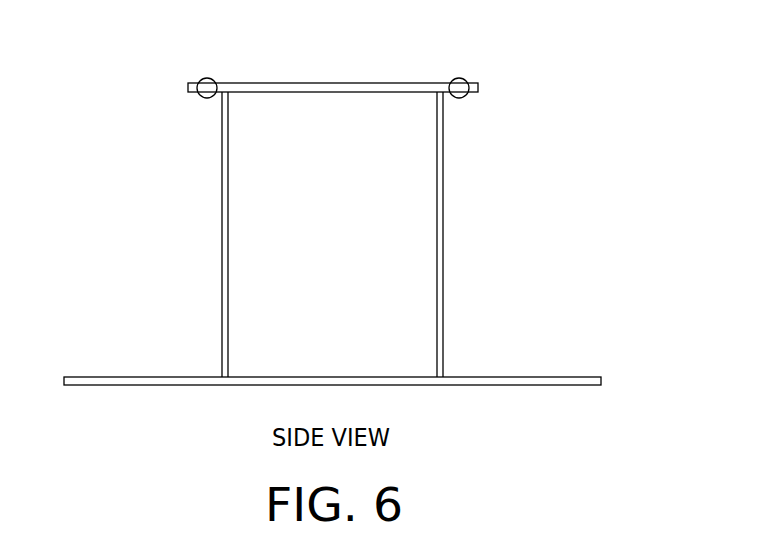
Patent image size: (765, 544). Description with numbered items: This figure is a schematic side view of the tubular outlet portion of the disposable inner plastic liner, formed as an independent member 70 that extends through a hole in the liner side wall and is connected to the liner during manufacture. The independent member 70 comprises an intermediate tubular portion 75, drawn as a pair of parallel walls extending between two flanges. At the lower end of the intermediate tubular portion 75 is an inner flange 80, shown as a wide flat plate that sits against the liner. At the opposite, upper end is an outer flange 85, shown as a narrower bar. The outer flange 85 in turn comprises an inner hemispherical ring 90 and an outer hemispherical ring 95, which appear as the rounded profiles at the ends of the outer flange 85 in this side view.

The independent member 70 is at (578, 77).
The intermediate tubular portion 75 is at (208, 264).
The inner flange 80 is at (551, 360).
The outer flange 85 is at (175, 87).
The inner hemispherical ring 90 is at (207, 98).
The outer hemispherical ring 95 is at (207, 78).